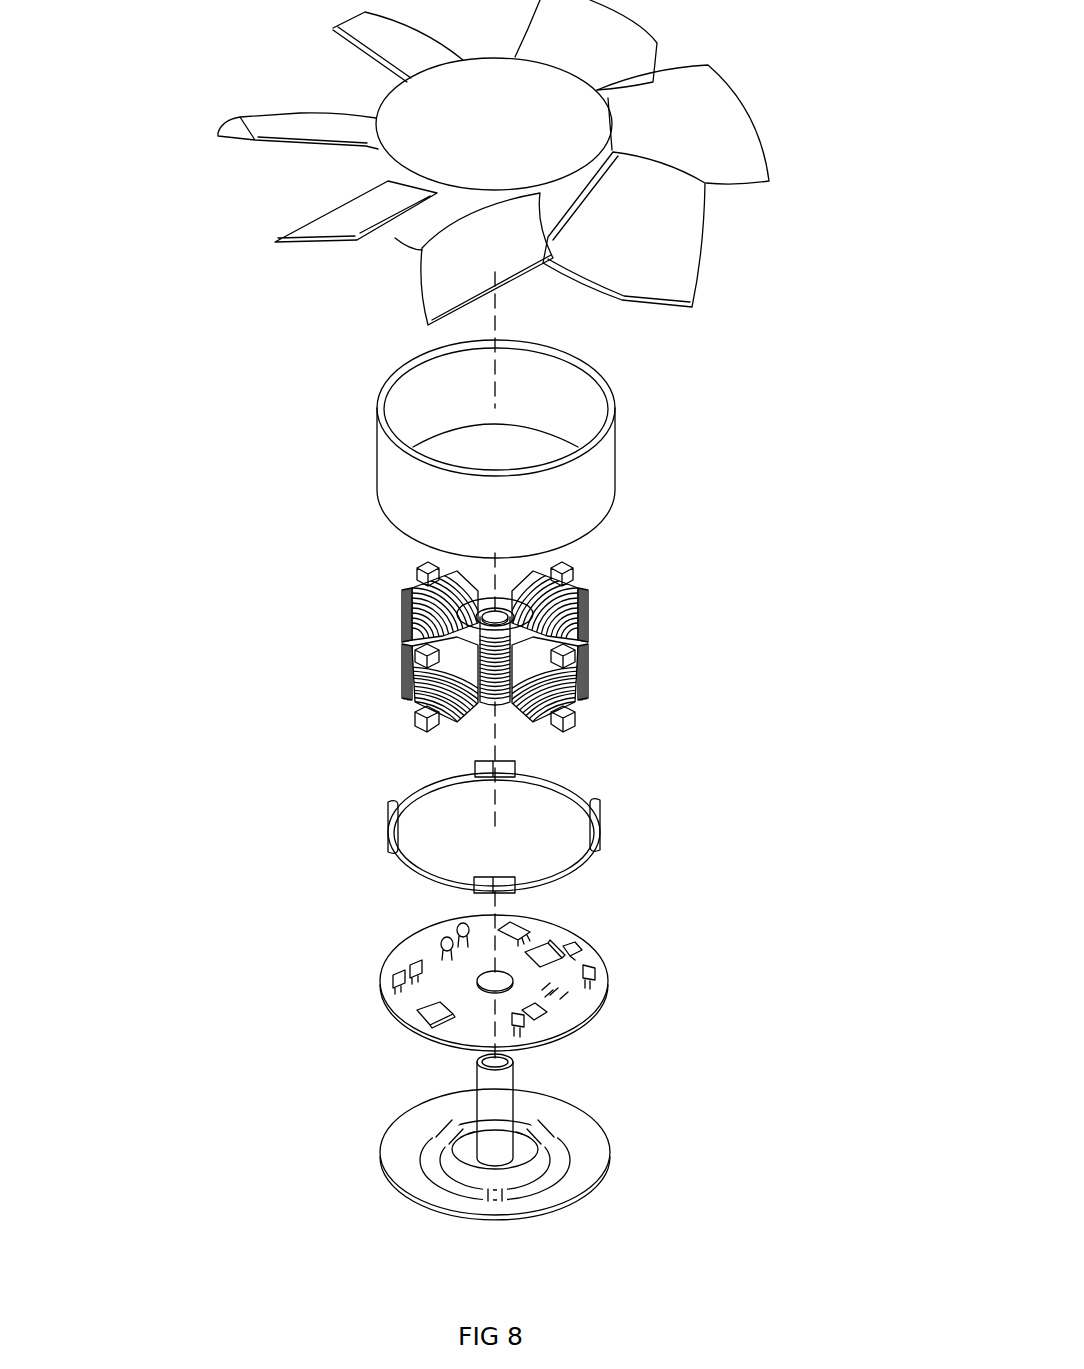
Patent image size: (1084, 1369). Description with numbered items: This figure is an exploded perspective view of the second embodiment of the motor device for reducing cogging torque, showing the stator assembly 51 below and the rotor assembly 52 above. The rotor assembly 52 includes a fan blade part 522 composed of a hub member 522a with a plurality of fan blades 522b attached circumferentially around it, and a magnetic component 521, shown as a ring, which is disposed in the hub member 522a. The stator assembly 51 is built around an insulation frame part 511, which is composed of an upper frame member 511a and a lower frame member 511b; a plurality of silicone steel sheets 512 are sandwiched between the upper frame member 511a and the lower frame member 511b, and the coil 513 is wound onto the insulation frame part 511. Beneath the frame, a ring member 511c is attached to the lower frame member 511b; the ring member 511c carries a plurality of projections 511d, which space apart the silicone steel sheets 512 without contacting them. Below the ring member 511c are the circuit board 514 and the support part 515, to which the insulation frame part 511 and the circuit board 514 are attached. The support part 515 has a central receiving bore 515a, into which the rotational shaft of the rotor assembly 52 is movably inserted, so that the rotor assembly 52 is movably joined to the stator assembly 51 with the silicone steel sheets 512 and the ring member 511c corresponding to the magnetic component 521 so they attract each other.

The stator assembly 51 is at (677, 562).
The rotor assembly 52 is at (680, 50).
The magnetic component 521 is at (453, 402).
The fan blade part 522 is at (762, 134).
The hub member 522a is at (433, 112).
The fan blades 522b is at (727, 170).
The insulation frame part 511 is at (250, 552).
The upper frame member 511a is at (407, 592).
The lower frame member 511b is at (405, 700).
The ring member 511c is at (403, 783).
The projections 511d is at (483, 765).
The silicone steel sheets 512 is at (590, 697).
The coil 513 is at (585, 602).
The circuit board 514 is at (462, 1002).
The support part 515 is at (583, 1125).
The receiving bore 515a is at (493, 1088).